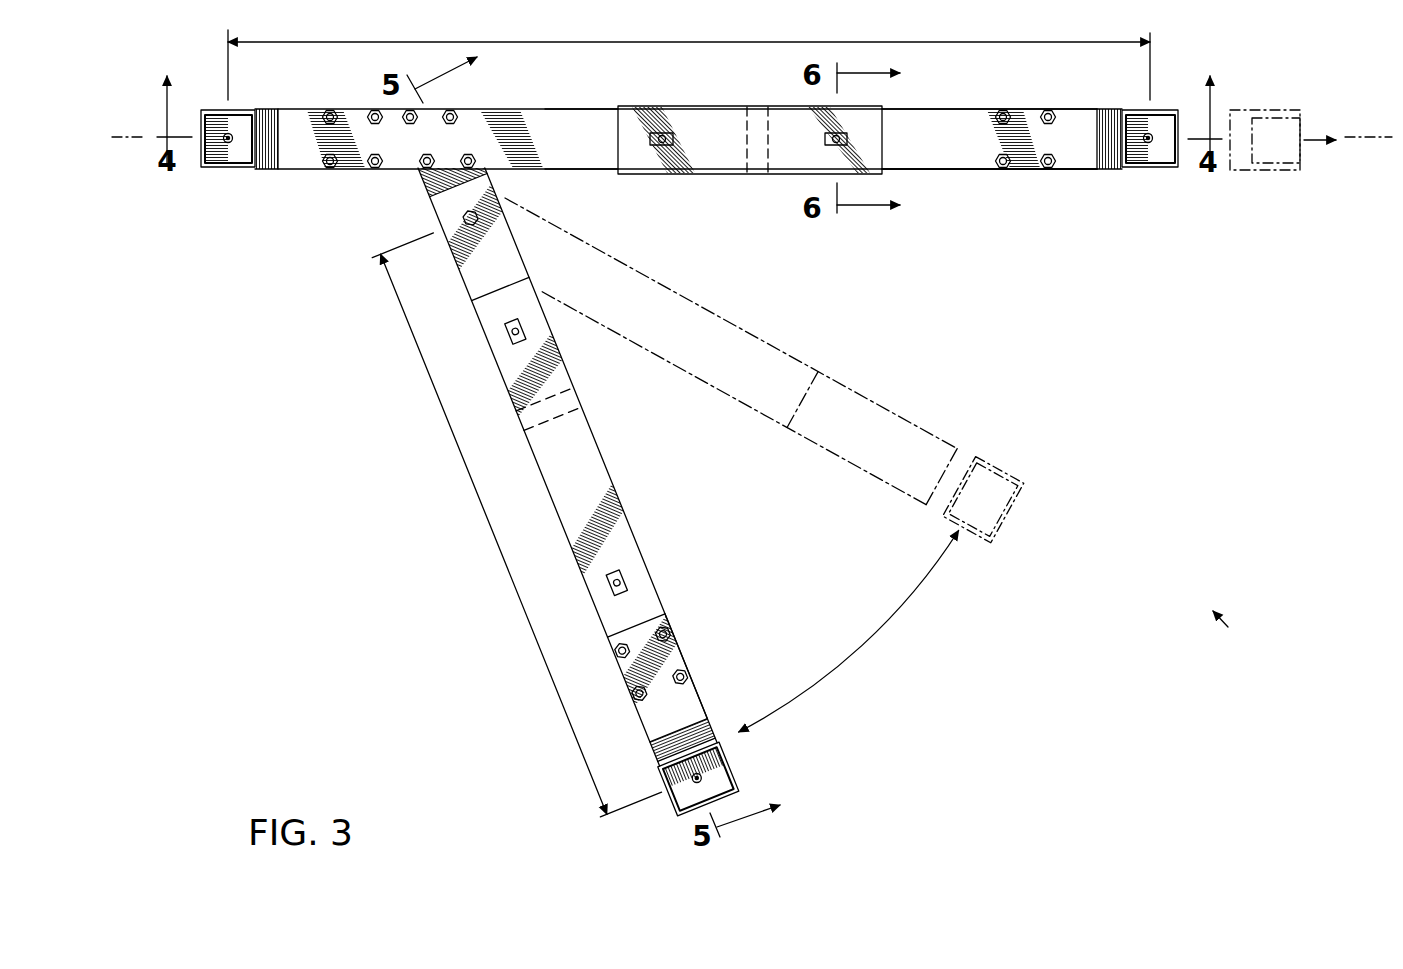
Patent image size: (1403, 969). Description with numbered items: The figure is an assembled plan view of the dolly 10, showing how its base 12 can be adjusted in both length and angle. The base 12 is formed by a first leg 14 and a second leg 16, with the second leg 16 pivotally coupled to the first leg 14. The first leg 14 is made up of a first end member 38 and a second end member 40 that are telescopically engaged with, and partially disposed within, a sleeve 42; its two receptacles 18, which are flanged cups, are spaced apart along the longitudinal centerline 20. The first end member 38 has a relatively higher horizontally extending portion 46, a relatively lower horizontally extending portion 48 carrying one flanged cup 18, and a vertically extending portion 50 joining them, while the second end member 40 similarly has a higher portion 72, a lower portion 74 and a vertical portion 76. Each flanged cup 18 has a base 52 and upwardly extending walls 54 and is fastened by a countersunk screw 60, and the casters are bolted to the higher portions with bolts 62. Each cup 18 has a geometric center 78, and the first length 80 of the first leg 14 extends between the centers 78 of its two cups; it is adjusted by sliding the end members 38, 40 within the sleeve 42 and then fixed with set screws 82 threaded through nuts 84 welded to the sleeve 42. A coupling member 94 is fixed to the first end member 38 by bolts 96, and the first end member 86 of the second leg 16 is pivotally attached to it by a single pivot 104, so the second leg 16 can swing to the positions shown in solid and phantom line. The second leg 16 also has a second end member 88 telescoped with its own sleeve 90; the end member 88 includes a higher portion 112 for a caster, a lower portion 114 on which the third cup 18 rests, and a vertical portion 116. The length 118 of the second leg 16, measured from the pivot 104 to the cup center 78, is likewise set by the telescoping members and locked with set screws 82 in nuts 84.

The dolly 10 is at (1233, 631).
The base 12 is at (383, 413).
The first leg 14 is at (756, 96).
The second leg 16 is at (641, 496).
The receptacles 18 is at (232, 172).
The longitudinal centerline 20 is at (136, 141).
The first end member 38 is at (533, 107).
The second end member 40 is at (941, 107).
The sleeve 42 is at (708, 106).
The first substantially horizontally extending portion 46 is at (594, 118).
The second substantially horizontally extending portion 48 is at (268, 150).
The substantially vertically extending portion 50 is at (277, 118).
The base 52 is at (210, 168).
The walls 54 is at (201, 118).
The countersunk screw 60 is at (215, 150).
The bolts 62 is at (374, 109).
The first substantially horizontally extending portion 72 is at (960, 169).
The second substantially horizontally extending portion 74 is at (1112, 165).
The substantially vertically extending portion 76 is at (1110, 110).
The geometric center 78 is at (226, 136).
The first length 80 is at (692, 42).
The set screws 82 is at (673, 139).
The threaded nuts 84 is at (832, 133).
The first end member 86 is at (461, 283).
The second end member 88 is at (704, 696).
The sleeve 90 is at (608, 462).
The coupling member 94 is at (430, 176).
The bolts 96 is at (433, 155).
The pivot 104 is at (480, 223).
The first substantially horizontally extending portion 112 is at (628, 672).
The second substantially horizontally extending portion 114 is at (685, 745).
The substantially vertically extending portion 116 is at (714, 736).
The length 118 is at (516, 524).